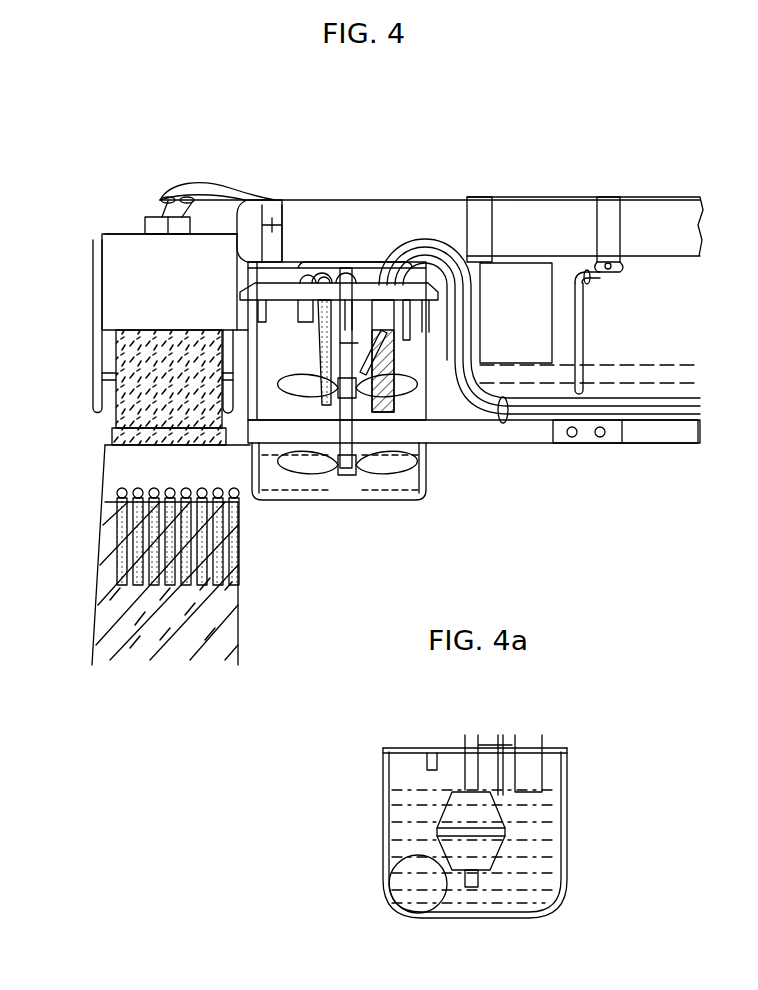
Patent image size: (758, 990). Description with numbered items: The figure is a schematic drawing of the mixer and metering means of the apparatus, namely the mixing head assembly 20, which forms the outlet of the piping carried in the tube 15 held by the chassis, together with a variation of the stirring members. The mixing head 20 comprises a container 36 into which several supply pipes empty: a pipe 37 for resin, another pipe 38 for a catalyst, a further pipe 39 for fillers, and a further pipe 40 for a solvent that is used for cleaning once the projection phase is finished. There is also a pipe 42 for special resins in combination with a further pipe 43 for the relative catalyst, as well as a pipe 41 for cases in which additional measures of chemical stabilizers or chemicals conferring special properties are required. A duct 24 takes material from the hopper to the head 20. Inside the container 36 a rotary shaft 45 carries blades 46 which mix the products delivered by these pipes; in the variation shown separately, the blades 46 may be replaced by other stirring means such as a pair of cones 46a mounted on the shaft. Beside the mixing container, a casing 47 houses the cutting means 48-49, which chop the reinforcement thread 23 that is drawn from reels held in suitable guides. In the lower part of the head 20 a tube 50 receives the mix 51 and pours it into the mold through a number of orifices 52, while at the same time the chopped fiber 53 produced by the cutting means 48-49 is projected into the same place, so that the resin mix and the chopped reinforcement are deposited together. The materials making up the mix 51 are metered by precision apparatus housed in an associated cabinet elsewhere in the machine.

In FIG. 4, the mixing head assembly 20 is at (113, 235).
In FIG. 4, the casing 47 is at (136, 255).
In FIG. 4, the reinforcement thread 23 is at (190, 196).
In FIG. 4, the pipe for special resins 42 is at (281, 305).
In FIG. 4, the pipe for fillers 39 is at (307, 308).
In FIG. 4, the pipe for a catalyst 38 is at (345, 310).
In FIG. 4A, the pipe for a catalyst 38 is at (435, 750).
In FIG. 4, the rotary shaft 45 is at (378, 305).
In FIG. 4, the pipe for resin 37 is at (412, 310).
In FIG. 4A, the pipe for resin 37 is at (535, 773).
In FIG. 4, the pipe for a solvent 40 is at (455, 212).
In FIG. 4, the duct 24 is at (566, 215).
In FIG. 4, the pipe for the relative catalyst 43 is at (250, 312).
In FIG. 4, the pipe for chemical stabilizers or special chemicals 41 is at (338, 347).
In FIG. 4A, the pipe for chemical stabilizers or special chemicals 41 is at (503, 745).
In FIG. 4, the cutting means 48-49 is at (132, 395).
In FIG. 4, the container 36 is at (427, 352).
In FIG. 4, the tube 15 is at (655, 432).
In FIG. 4, the blades 46 is at (398, 466).
In FIG. 4, the tube 50 is at (325, 483).
In FIG. 4A, the tube 50 is at (405, 875).
In FIG. 4, the orifices 52 is at (233, 497).
In FIG. 4, the mix 51 is at (112, 545).
In FIG. 4, the chopped fiber 53 is at (152, 640).
In FIG. 4A, the pair of cones 46a is at (488, 850).